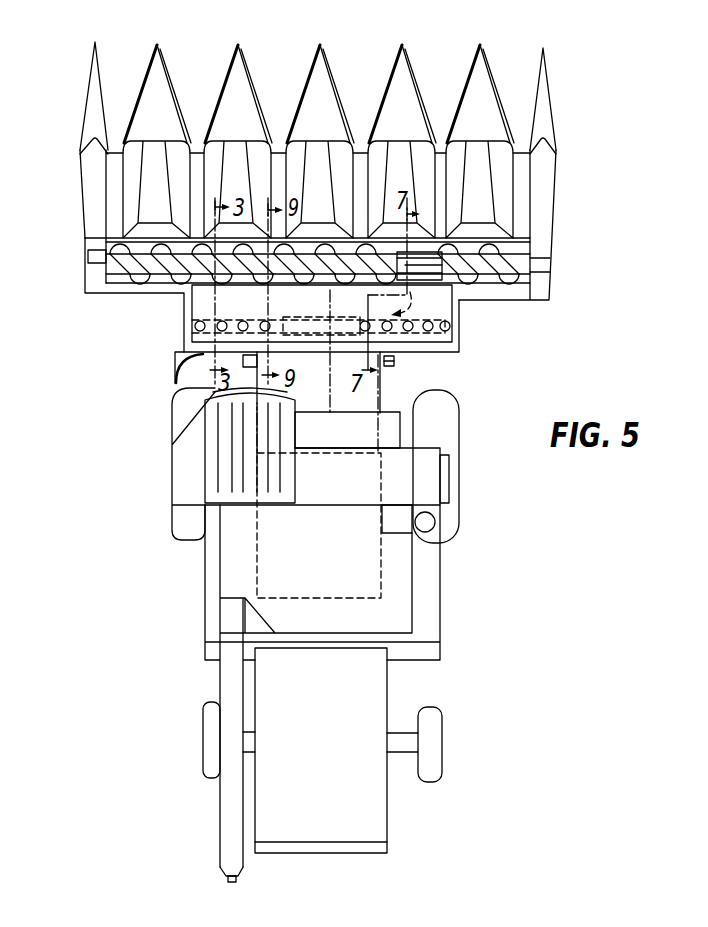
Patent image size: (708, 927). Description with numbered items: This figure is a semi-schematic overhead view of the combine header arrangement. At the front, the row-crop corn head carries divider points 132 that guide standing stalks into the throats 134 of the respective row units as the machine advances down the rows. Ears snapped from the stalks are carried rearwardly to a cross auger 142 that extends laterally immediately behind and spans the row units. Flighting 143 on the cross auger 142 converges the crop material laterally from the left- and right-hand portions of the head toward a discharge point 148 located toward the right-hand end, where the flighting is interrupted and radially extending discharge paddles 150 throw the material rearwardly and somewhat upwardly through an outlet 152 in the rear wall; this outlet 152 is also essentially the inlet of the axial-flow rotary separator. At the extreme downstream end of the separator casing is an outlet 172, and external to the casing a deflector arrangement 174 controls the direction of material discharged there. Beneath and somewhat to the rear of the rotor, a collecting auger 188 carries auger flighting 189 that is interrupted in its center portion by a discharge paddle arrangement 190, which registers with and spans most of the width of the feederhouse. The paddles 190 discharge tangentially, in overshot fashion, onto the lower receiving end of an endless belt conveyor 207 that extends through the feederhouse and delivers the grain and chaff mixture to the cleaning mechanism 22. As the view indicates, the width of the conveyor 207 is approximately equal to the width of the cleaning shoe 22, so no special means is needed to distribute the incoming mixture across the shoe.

The cleaning mechanism 22 is at (389, 565).
The divider points 132 is at (155, 48).
The throats 134 is at (197, 142).
The cross auger 142 is at (135, 247).
The flighting 143 is at (166, 258).
The discharge point 148 is at (429, 250).
The discharge paddles 150 is at (428, 245).
The outlet 152 is at (452, 285).
The outlet 172 is at (127, 378).
The deflector arrangement 174 is at (178, 386).
The collecting auger 188 is at (274, 313).
The auger flighting 189 is at (190, 300).
The discharge paddle arrangement 190 is at (347, 369).
The endless belt conveyor 207 is at (391, 381).